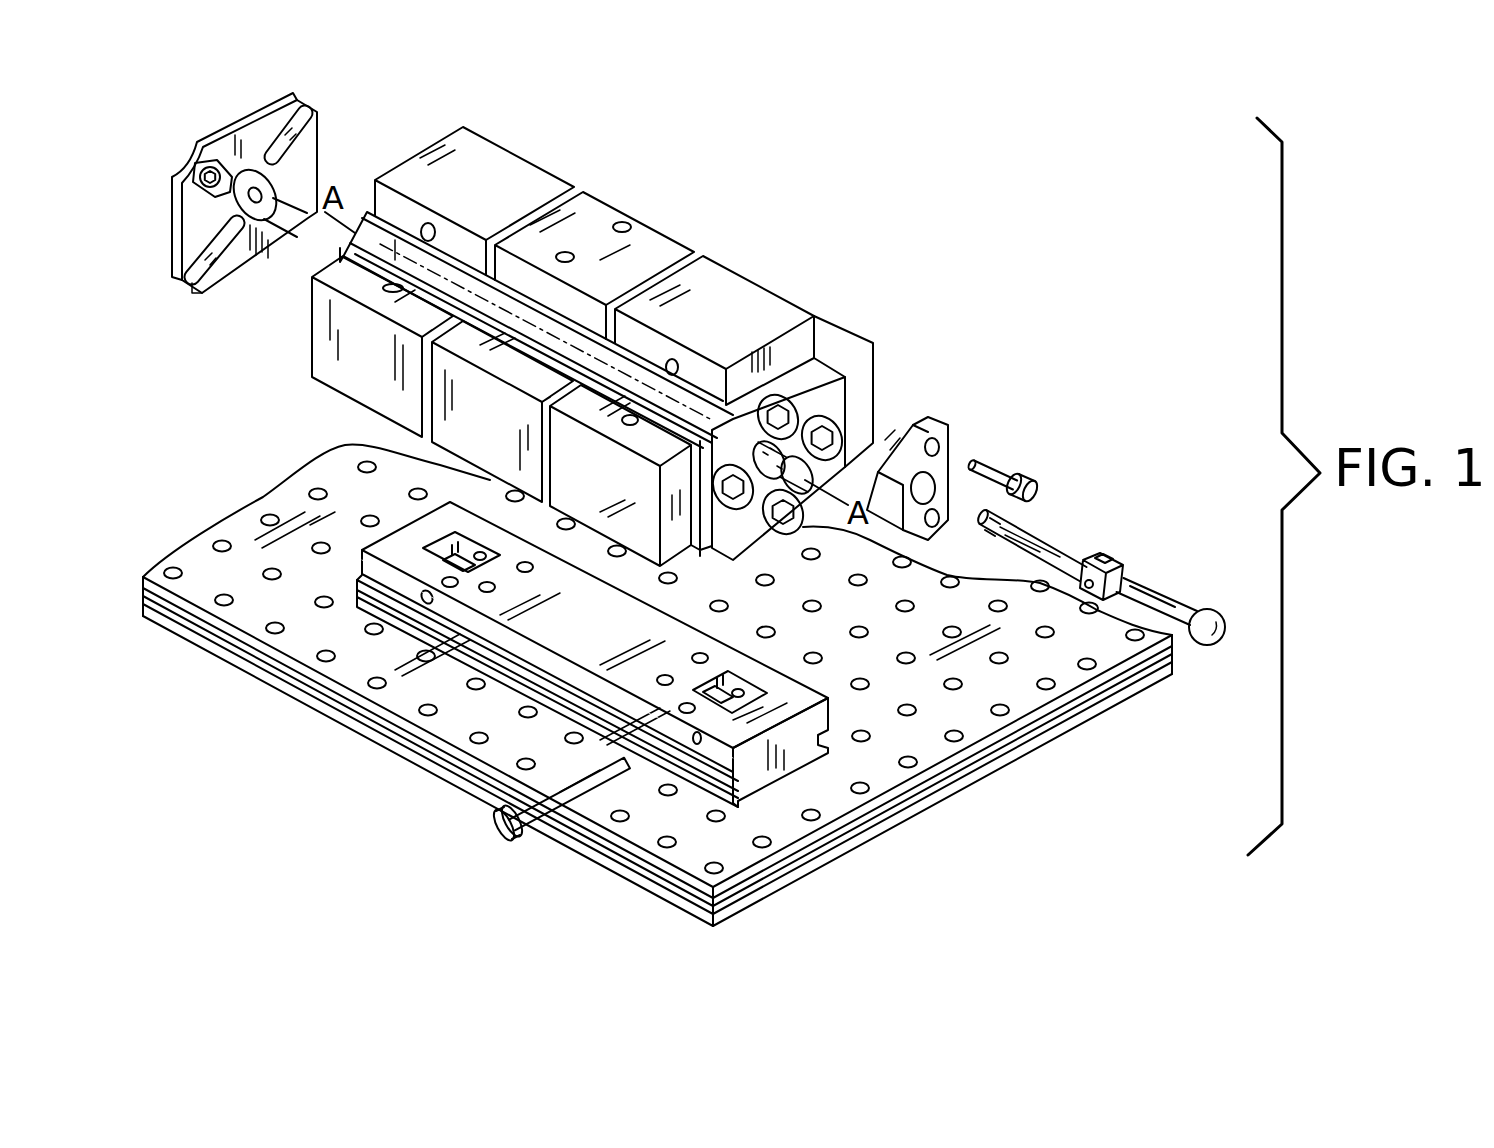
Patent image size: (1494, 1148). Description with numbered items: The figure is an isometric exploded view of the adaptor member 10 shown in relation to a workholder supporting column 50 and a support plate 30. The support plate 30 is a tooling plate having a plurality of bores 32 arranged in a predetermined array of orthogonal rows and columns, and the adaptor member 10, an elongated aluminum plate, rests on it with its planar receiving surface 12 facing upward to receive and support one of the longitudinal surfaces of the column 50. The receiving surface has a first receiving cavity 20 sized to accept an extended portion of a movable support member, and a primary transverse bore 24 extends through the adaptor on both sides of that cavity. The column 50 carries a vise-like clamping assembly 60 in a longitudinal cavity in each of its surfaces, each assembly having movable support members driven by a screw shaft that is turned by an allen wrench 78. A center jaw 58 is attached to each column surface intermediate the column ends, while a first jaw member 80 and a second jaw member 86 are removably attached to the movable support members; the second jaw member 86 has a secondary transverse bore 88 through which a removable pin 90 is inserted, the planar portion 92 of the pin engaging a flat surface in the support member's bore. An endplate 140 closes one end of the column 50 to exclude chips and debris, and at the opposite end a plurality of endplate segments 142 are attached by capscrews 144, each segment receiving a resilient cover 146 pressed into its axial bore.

The adaptor member 10 is at (800, 770).
The planar receiving surface 12 is at (612, 637).
The first receiving cavity 20 is at (690, 707).
The primary transverse bore 24 is at (767, 673).
The support plate 30 is at (1035, 755).
The bores 32 is at (175, 568).
The workholder supporting column 50 is at (860, 390).
The center jaw 58 is at (640, 248).
The clamping assembly 60 is at (800, 408).
The allen wrench 78 is at (1157, 600).
The first jaw member 80 is at (734, 329).
The second jaw member 86 is at (500, 197).
The secondary transverse bore 88 is at (428, 222).
The removable pin 90 is at (500, 830).
The planar portion 92 is at (568, 771).
The endplate 140 is at (236, 128).
The endplate segments 142 is at (948, 443).
The capscrews 144 is at (1032, 480).
The resilient cover 146 is at (937, 488).